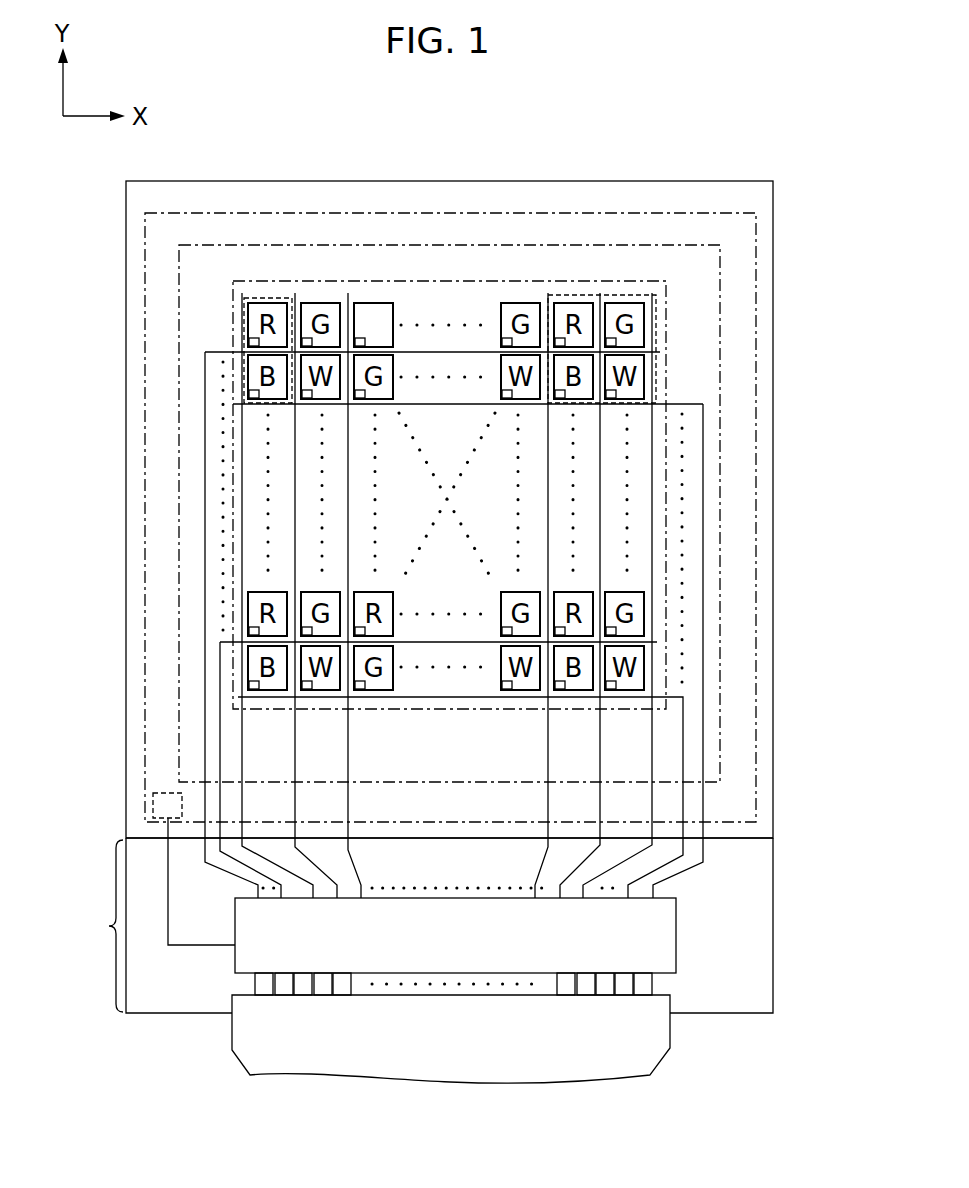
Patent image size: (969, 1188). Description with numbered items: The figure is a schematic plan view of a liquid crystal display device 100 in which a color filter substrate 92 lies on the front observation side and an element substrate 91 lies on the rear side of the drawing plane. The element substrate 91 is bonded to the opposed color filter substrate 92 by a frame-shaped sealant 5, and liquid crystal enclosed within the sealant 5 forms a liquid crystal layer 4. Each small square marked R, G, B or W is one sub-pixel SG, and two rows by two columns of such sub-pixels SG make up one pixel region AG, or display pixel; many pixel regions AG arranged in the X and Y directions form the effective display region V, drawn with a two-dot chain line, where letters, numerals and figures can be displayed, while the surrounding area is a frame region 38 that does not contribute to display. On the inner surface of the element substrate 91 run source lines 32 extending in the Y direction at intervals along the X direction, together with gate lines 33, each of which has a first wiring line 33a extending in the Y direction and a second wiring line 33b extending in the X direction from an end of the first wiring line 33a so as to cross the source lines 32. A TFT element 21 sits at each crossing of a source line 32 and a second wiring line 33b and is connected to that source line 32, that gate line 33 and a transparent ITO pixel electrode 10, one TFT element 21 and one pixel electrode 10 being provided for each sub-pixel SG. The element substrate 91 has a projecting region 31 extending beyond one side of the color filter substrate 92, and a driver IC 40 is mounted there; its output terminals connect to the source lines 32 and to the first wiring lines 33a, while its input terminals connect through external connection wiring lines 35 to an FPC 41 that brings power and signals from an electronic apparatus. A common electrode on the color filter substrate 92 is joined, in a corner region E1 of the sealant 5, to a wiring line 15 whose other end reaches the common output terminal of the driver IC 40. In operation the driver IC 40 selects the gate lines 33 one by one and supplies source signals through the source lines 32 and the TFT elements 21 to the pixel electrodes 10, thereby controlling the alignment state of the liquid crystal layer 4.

The liquid crystal display device 100 is at (749, 139).
The element substrate 91 is at (765, 1014).
The color filter substrate 92 is at (752, 840).
The projecting region 31 is at (100, 926).
The sealant 5 is at (757, 757).
The liquid crystal layer 4 is at (420, 266).
The effective display region V is at (473, 281).
The sub-pixel SG is at (264, 298).
The pixel region AG is at (585, 295).
The pixel electrode 10 is at (368, 303).
The TFT element 21 is at (306, 340).
The frame region 38 is at (193, 530).
The source line 32 is at (596, 868).
The gate line 33 is at (832, 392).
The first wiring line 33a is at (703, 452).
The second wiring line 33b is at (687, 401).
The driver IC 40 is at (677, 935).
The external connection wiring line 35 is at (655, 985).
The FPC 41 is at (666, 1056).
The wiring line 15 is at (170, 920).
The corner region E1 is at (153, 796).